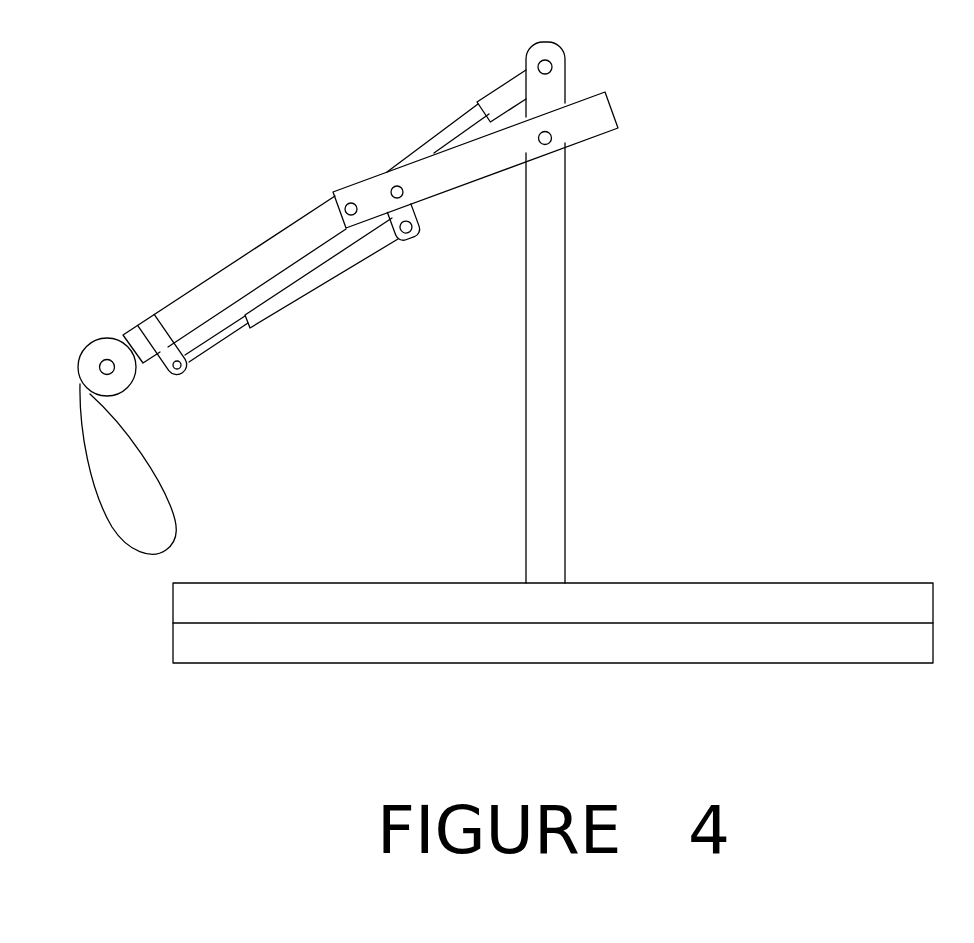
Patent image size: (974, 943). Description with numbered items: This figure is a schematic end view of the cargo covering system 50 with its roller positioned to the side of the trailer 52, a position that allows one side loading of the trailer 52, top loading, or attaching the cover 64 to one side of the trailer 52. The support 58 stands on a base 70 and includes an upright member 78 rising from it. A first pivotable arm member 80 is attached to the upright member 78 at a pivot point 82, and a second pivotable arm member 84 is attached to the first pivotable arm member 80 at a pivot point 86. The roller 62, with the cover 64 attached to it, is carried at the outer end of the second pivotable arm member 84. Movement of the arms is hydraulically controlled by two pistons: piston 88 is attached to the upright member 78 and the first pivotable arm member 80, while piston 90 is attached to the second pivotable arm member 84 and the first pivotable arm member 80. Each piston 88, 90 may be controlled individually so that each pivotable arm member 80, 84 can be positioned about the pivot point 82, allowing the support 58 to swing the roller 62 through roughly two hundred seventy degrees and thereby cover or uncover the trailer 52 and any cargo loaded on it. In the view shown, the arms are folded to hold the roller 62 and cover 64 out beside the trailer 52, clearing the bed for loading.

The cargo covering system 50 is at (742, 148).
The trailer 52 is at (558, 631).
The support 58 is at (570, 312).
The roller 62 is at (87, 343).
The cover 64 is at (107, 513).
The base 70 is at (700, 590).
The upright member 78 is at (525, 340).
The first pivotable arm member 80 is at (477, 181).
The pivot point 82 is at (551, 132).
The second pivotable arm member 84 is at (208, 277).
The pivot point 86 is at (351, 203).
The piston 88 is at (503, 85).
The piston 90 is at (313, 291).